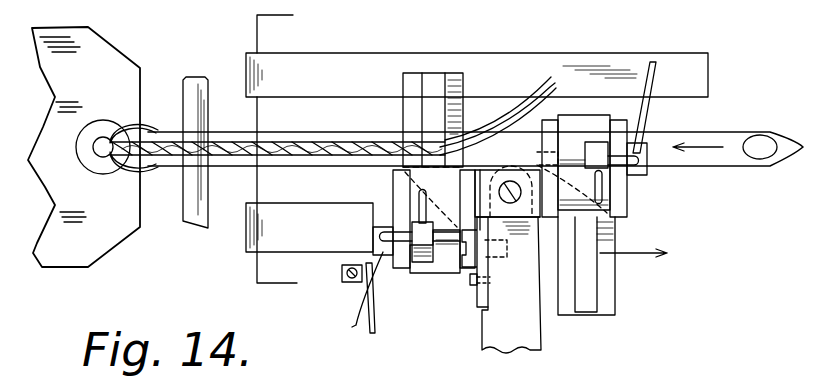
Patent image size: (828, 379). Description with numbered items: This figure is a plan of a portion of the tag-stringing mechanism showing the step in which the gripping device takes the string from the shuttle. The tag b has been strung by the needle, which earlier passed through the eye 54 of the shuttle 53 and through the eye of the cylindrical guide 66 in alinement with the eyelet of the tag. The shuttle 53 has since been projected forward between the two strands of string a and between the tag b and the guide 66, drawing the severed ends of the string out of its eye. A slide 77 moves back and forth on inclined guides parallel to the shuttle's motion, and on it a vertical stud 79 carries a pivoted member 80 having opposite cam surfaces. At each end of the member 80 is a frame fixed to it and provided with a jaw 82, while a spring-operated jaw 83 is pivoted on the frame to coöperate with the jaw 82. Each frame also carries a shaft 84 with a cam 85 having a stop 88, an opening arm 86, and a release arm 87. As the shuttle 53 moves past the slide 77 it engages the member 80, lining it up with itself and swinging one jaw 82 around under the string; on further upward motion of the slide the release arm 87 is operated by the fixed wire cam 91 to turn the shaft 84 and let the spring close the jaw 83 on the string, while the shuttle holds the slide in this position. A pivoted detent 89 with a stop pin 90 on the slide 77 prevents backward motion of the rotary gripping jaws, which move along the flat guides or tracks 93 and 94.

The tag b is at (105, 53).
The rope a is at (248, 152).
The shuttle 53 is at (761, 164).
The eye 54 is at (757, 140).
The cylindrical guide 66 is at (199, 88).
The slide 77 is at (532, 337).
The vertical stud 79 is at (510, 187).
The member 80 is at (485, 176).
The jaw 82 is at (458, 78).
The jaw 83 is at (427, 83).
The shaft 84 is at (569, 152).
The cam 85 is at (600, 150).
The opening arm 86 is at (654, 73).
The release arm 87 is at (618, 167).
The stop 88 is at (598, 188).
The pivoted detent 89 is at (480, 307).
The stop pin 90 is at (470, 280).
The fixed wire cam 91 is at (356, 327).
The flat guide or track 93 is at (300, 208).
The flat guide or track 94 is at (322, 58).